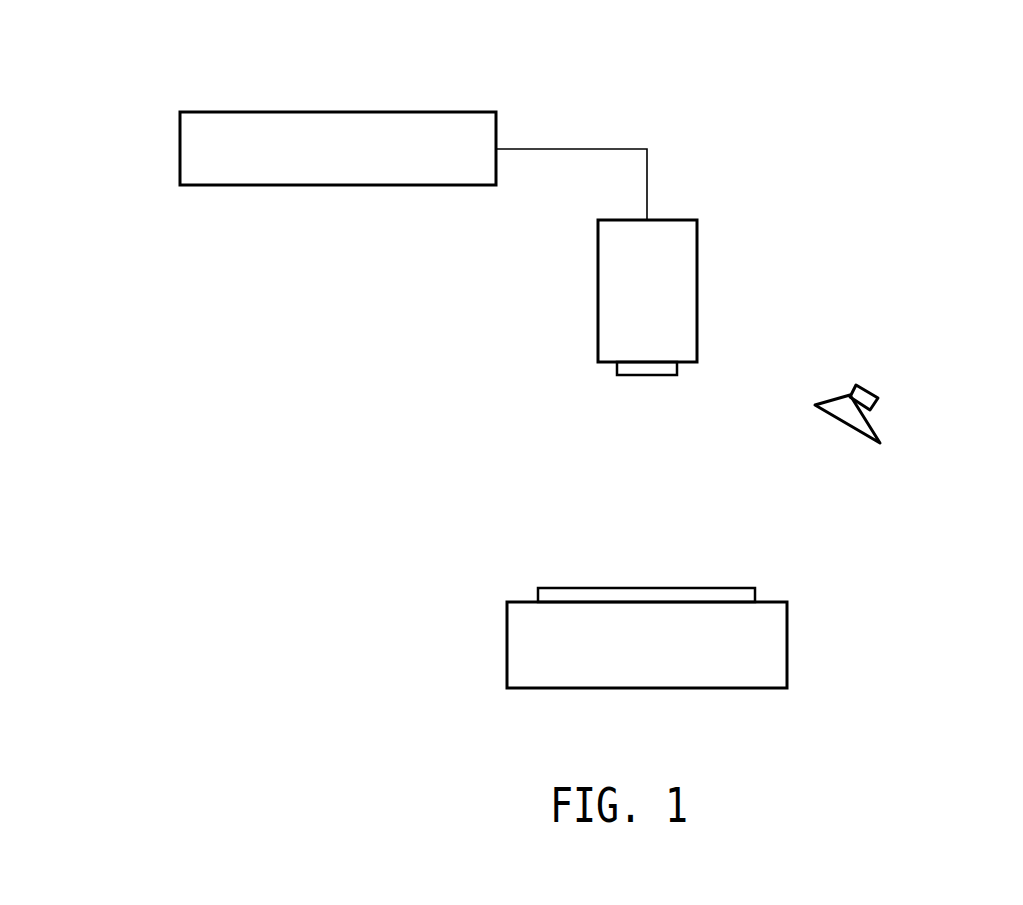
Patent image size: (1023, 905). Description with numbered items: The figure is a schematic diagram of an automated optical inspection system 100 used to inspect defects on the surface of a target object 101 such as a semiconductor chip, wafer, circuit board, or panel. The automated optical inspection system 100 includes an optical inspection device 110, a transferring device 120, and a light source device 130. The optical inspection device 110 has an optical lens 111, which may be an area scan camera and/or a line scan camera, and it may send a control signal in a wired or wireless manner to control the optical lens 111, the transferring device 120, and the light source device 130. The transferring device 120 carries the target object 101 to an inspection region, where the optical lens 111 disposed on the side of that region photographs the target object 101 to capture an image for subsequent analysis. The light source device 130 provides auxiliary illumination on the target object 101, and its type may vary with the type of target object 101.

The automated optical inspection system 100 is at (994, 732).
The target object 101 is at (737, 587).
The optical inspection device 110 is at (338, 112).
The optical lens 111 is at (598, 290).
The transferring device 120 is at (788, 643).
The light source device 130 is at (868, 388).